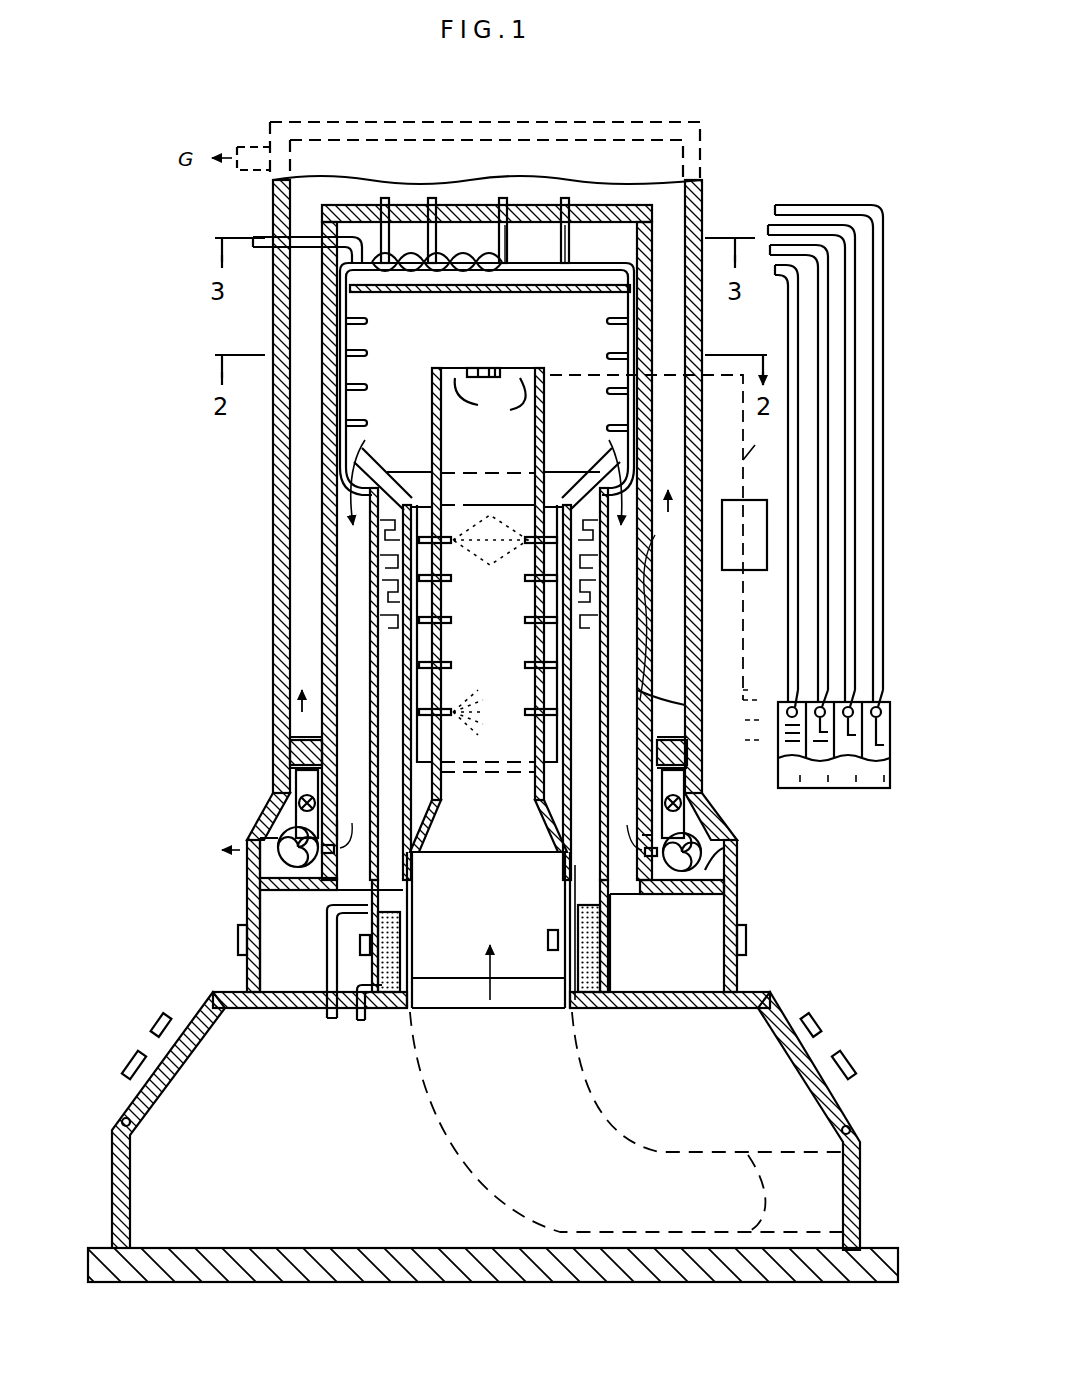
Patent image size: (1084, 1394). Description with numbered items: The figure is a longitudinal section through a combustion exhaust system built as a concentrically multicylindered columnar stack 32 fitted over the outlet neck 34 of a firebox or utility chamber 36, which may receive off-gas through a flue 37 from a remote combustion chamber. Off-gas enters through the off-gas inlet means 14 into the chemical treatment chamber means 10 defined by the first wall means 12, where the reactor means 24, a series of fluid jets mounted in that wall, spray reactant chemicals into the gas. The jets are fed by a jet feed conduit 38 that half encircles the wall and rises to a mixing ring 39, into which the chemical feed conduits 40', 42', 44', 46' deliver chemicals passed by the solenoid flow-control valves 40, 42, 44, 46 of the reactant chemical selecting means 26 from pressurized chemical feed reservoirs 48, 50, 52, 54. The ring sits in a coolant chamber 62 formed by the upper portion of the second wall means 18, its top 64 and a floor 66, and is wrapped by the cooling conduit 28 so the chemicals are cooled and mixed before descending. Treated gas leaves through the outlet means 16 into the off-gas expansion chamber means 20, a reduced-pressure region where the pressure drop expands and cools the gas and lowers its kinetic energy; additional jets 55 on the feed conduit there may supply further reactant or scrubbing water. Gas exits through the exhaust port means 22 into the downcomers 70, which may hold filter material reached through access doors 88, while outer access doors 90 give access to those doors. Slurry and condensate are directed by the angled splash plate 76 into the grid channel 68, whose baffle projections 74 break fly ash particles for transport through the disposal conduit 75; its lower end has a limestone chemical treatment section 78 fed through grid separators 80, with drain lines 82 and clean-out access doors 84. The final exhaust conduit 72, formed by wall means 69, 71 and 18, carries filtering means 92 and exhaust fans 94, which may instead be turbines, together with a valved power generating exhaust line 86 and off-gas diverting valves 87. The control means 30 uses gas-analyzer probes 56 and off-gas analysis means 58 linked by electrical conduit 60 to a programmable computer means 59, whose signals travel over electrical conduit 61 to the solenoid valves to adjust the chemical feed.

The chemical treatment chamber means 10 is at (488, 584).
The first wall means 12 is at (514, 700).
The off-gas inlet means 14 is at (472, 840).
The outlet means 16 is at (435, 345).
The second wall means 18 is at (330, 340).
The off-gas expansion chamber means 20 is at (490, 309).
The exhaust port means 22 is at (368, 458).
The reactor means 24 is at (451, 578).
The reactant chemical selecting means 26 is at (775, 698).
The cooling means conduit 28 is at (450, 262).
The control means 30 is at (761, 447).
The columnar stack 32 is at (230, 690).
The outlet neck 34 is at (415, 978).
The firebox 36 is at (486, 1121).
The flue 37 is at (588, 1092).
The jet feed conduit 38 is at (445, 610).
The mixing ring 39 is at (572, 263).
The solenoid flow-control valve 40 is at (853, 647).
The solenoid flow-control valve 42 is at (867, 662).
The solenoid flow-control valve 44 is at (881, 677).
The solenoid flow-control valve 46 is at (895, 692).
The lead pin 40' is at (357, 206).
The lead pin 42' is at (410, 206).
The lead pin 44' is at (476, 206).
The lead pin 46' is at (542, 206).
The chemical feed reservoir 48 is at (795, 788).
The chemical feed reservoir 50 is at (822, 788).
The chemical feed reservoir 52 is at (848, 788).
The chemical feed reservoir 54 is at (876, 788).
The additional jets 55 is at (366, 390).
The gas-analyzer probe 56 is at (472, 368).
The off-gas analysis means 58 is at (498, 372).
The computer means 59 is at (742, 500).
The electrical conduit 60 is at (580, 375).
The electrical conduit 61 is at (746, 645).
The coolant chamber 62 is at (586, 270).
The top 64 is at (592, 205).
The floor 66 is at (402, 294).
The grid channel 68 is at (575, 500).
The wall means 69 is at (545, 810).
The downcomers 70 is at (375, 580).
The wall means 71 is at (660, 692).
The exhaust conduit 72 is at (283, 205).
The baffle projections 74 is at (625, 590).
The disposal conduit means 75 is at (326, 922).
The angled splash plate 76 is at (345, 458).
The chemical treatment section 78 is at (578, 952).
The grid separators 80 is at (580, 910).
The drain lines 82 is at (400, 1012).
The clean-out access doors 84 is at (362, 938).
The power generating gas exhaust line 86 is at (665, 548).
The off-gas diverting valves 87 is at (298, 803).
The access doors 88 is at (580, 885).
The access doors 90 is at (248, 915).
The filtering means 92 is at (687, 740).
The exhaust fans 94 is at (705, 855).